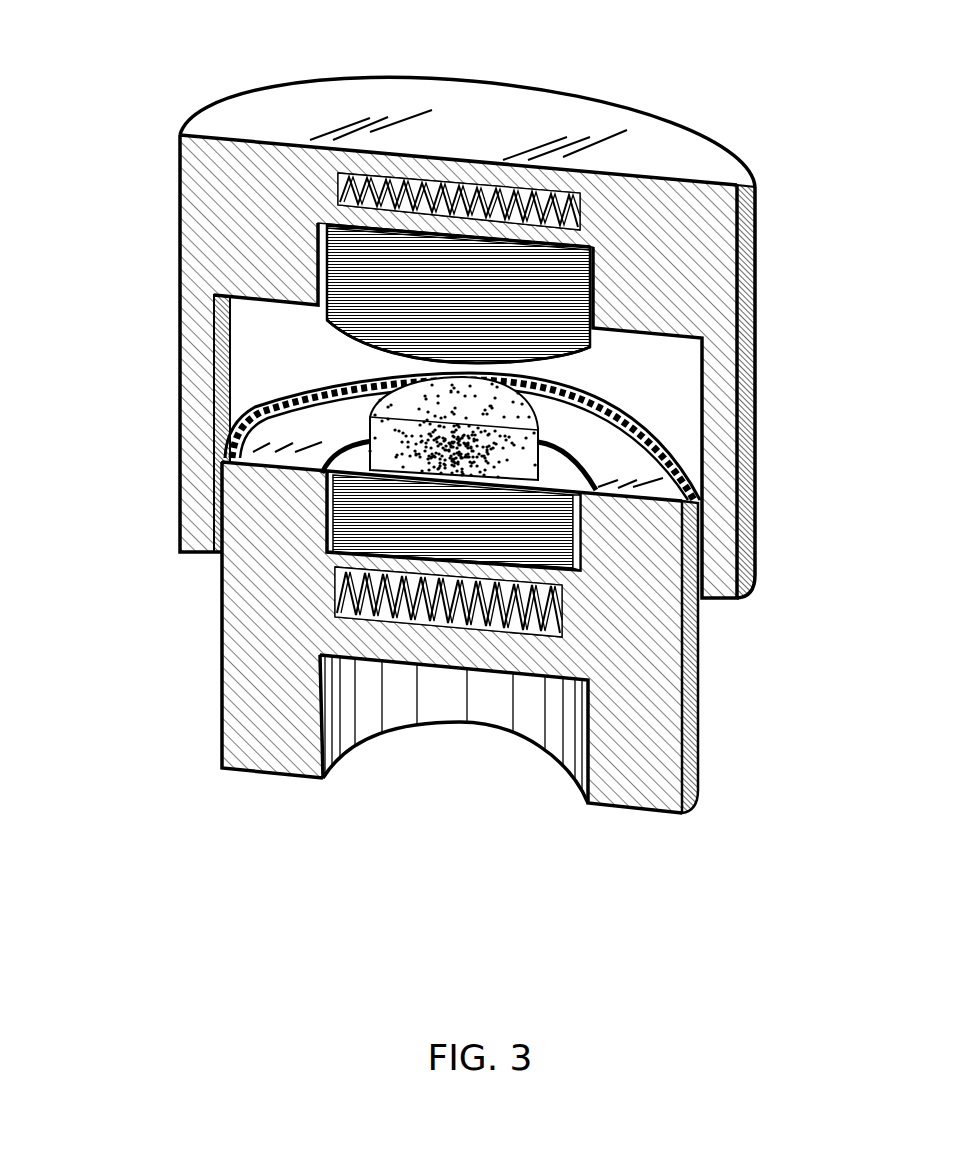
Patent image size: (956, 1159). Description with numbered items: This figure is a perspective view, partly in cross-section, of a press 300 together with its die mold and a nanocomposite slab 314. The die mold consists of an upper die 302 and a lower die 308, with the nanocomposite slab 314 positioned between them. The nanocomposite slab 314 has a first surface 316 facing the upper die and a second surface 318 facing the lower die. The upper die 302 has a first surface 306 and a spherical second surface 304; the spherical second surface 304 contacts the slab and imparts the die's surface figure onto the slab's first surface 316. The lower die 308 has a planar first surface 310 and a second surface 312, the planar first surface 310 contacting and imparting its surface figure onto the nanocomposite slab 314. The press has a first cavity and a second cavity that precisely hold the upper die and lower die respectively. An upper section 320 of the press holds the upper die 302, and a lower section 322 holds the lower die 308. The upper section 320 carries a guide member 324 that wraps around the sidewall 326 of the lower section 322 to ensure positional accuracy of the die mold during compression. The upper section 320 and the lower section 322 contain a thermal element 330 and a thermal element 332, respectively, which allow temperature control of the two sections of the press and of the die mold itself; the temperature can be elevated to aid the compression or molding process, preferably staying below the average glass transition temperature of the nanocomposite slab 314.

The press 300 is at (397, 501).
The upper die 302 is at (546, 305).
The spherical second surface 304 is at (345, 330).
The first surface 306 is at (343, 223).
The lower die 308 is at (512, 543).
The planar first surface 310 is at (575, 472).
The second surface 312 is at (565, 577).
The nanocomposite slab 314 is at (420, 462).
The first surface 316 is at (535, 405).
The second surface 318 is at (397, 477).
The upper section 320 is at (590, 100).
The lower section 322 is at (697, 697).
The guide member 324 is at (178, 383).
The sidewall 326 is at (222, 615).
The thermal element 330 is at (437, 183).
The thermal element 332 is at (333, 600).